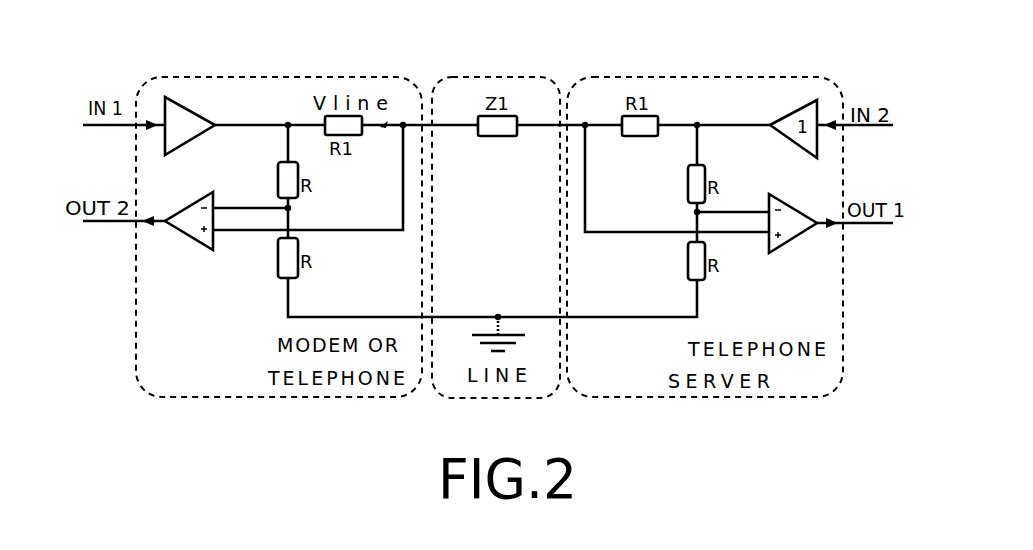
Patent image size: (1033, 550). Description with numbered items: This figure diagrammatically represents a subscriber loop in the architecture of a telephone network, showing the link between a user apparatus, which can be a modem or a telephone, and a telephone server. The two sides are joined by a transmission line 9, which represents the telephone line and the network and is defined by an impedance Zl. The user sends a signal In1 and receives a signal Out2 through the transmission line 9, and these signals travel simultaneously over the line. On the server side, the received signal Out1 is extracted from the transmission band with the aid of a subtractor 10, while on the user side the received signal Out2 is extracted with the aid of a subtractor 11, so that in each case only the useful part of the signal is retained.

The transmission line 9 is at (477, 77).
The subtractor 10 is at (800, 237).
The subtractor 11 is at (185, 238).